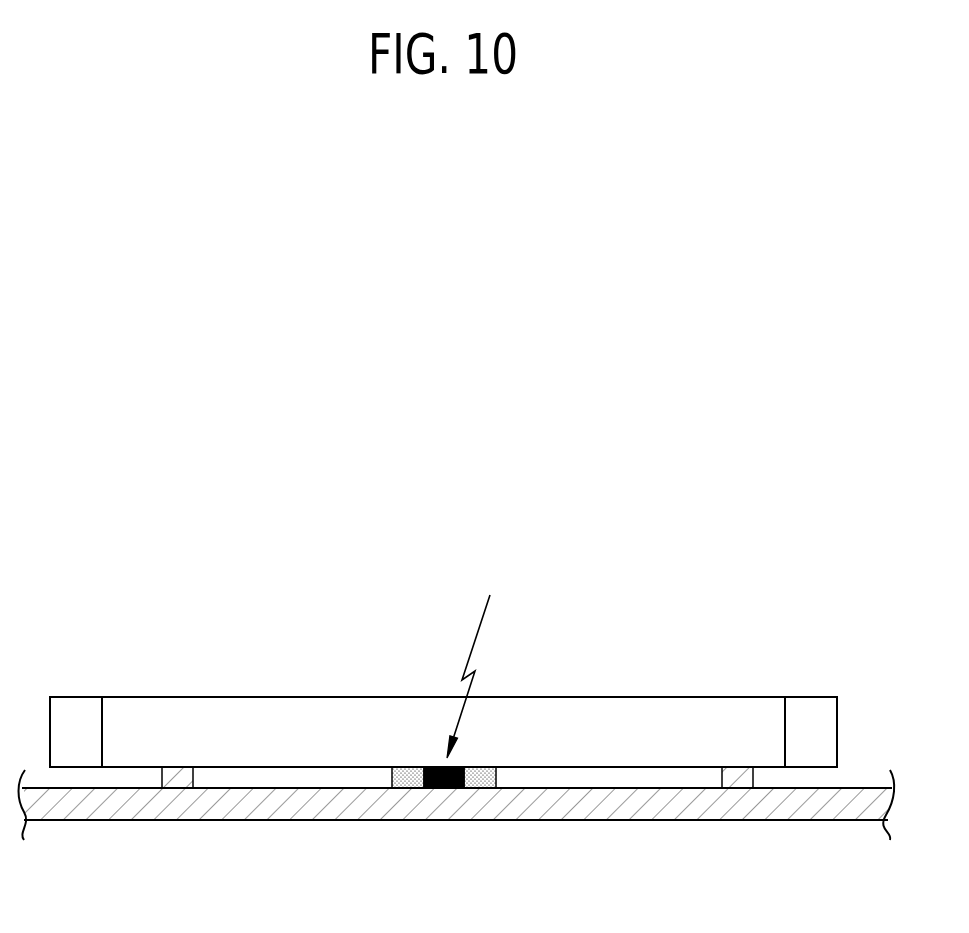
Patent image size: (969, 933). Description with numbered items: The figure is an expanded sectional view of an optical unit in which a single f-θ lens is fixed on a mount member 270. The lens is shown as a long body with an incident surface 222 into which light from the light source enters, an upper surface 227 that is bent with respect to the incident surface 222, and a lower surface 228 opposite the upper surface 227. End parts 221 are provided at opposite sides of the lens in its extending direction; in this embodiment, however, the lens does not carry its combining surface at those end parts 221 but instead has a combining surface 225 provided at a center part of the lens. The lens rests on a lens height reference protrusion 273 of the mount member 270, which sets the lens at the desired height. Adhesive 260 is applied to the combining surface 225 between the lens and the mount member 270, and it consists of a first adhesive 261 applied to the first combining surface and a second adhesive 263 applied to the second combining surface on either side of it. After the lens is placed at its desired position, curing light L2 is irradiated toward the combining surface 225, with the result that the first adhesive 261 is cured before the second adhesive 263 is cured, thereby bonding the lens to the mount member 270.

The end part 221 is at (79, 697).
The incident surface 222 is at (267, 742).
The combining surface 225 is at (475, 767).
The upper surface 227 is at (235, 697).
The lower surface 228 is at (615, 770).
The adhesive 260 is at (448, 850).
The first adhesive 261 is at (445, 790).
The second adhesive 263 is at (403, 780).
The mount member 270 is at (97, 813).
The lens height reference protrusion 273 is at (178, 778).
The curing light L2 is at (483, 622).